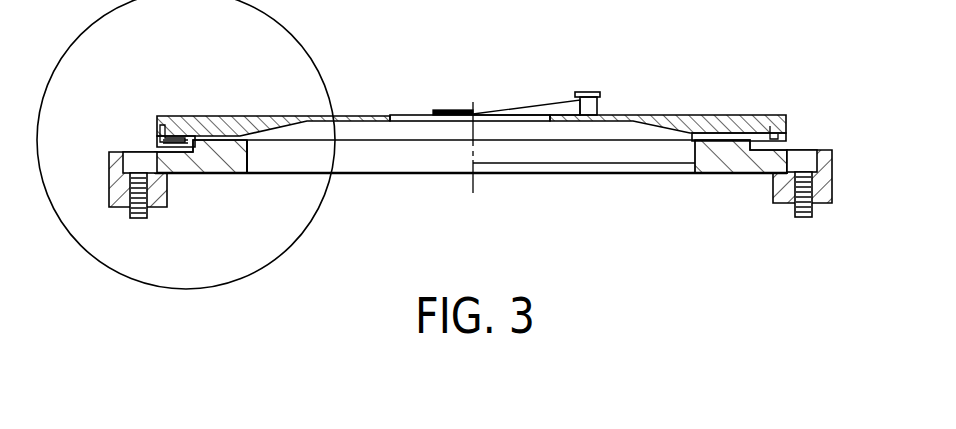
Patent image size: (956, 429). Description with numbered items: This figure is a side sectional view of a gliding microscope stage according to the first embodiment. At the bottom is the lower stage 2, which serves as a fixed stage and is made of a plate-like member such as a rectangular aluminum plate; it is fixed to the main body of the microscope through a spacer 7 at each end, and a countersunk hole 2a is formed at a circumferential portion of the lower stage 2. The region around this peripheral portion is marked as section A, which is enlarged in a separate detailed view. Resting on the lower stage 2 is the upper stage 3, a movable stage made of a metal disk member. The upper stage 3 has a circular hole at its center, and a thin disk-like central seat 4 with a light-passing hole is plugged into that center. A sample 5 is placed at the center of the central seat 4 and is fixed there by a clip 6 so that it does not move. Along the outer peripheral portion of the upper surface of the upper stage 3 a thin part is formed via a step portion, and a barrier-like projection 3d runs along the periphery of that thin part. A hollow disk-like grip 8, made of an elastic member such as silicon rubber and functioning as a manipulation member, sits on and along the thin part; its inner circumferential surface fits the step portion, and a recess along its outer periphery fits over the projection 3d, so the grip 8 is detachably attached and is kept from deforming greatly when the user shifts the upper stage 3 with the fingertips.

The section A is at (72, 45).
The lower stage 2 is at (718, 163).
The countersunk hole 2a is at (832, 161).
The upper stage 3 is at (656, 112).
The projection 3d is at (157, 128).
The central seat 4 is at (341, 112).
The sample 5 is at (455, 112).
The clip 6 is at (550, 108).
The spacer 7 is at (118, 207).
The grip 8 is at (737, 113).